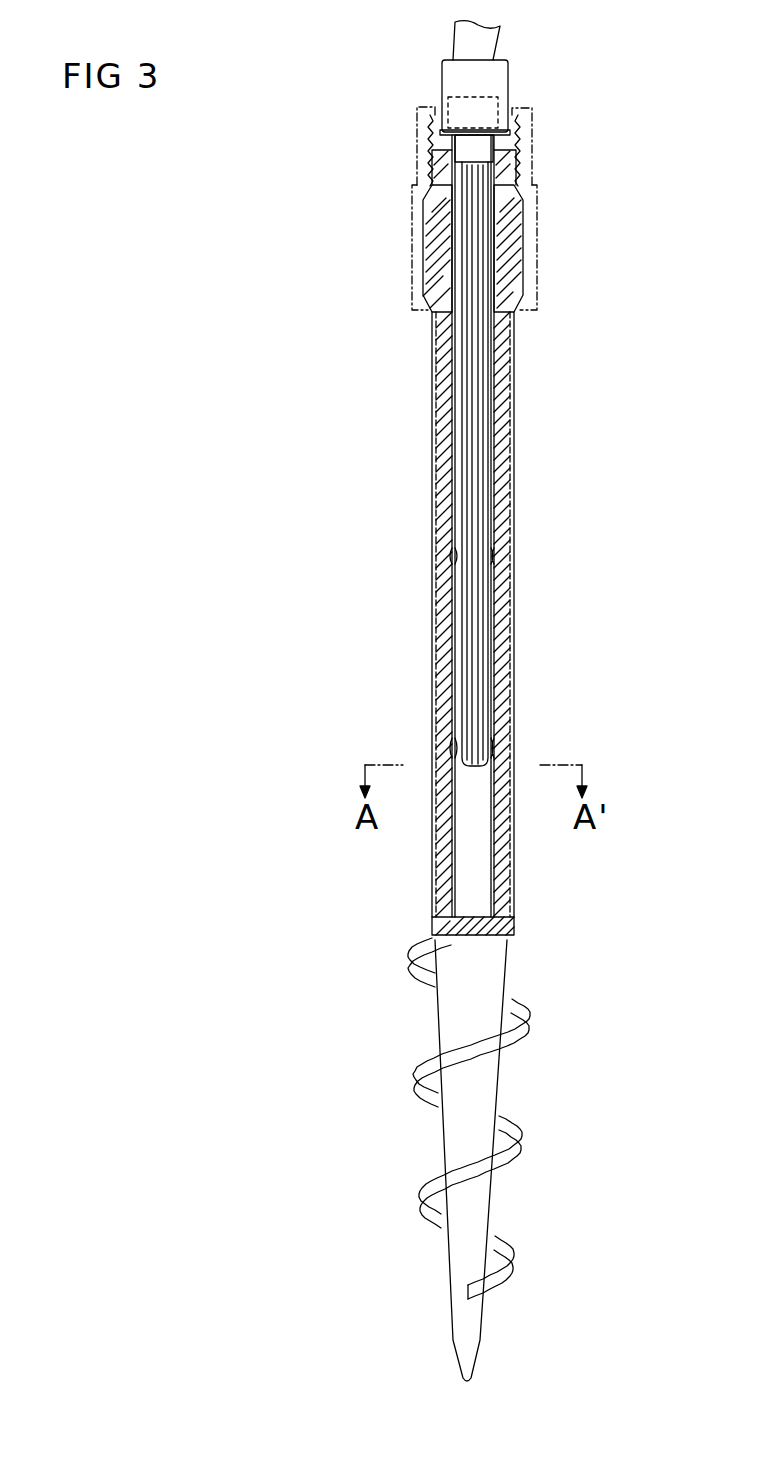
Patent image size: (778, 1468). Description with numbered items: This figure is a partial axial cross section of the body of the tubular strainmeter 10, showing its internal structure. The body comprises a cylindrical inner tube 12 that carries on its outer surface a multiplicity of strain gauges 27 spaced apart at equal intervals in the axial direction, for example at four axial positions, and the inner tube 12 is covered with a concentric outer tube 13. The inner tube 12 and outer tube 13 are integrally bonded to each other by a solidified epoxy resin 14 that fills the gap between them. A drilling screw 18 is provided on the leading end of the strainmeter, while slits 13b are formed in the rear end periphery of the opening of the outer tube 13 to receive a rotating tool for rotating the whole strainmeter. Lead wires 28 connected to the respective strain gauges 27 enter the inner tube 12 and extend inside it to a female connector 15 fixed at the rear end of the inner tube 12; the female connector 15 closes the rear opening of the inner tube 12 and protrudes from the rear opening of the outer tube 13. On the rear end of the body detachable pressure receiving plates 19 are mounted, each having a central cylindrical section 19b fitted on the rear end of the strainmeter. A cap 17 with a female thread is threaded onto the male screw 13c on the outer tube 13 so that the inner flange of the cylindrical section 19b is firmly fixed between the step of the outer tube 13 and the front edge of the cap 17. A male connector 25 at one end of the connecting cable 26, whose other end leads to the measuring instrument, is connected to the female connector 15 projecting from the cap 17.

The tubular strainmeter 10 is at (412, 473).
The inner tube 12 is at (440, 886).
The outer tube 13 is at (512, 908).
The slits 13b is at (427, 170).
The male screw 13c is at (517, 173).
The epoxy resin 14 is at (505, 855).
The female connector 15 is at (478, 148).
The cap 17 is at (418, 152).
The drilling screw 18 is at (497, 1190).
The pressure receiving plates 19 is at (550, 243).
The cylindrical section 19b is at (536, 283).
The male connector 25 is at (508, 88).
The connecting cable 26 is at (500, 38).
The strain gauges 27 is at (455, 548).
The lead wires 28 is at (484, 450).